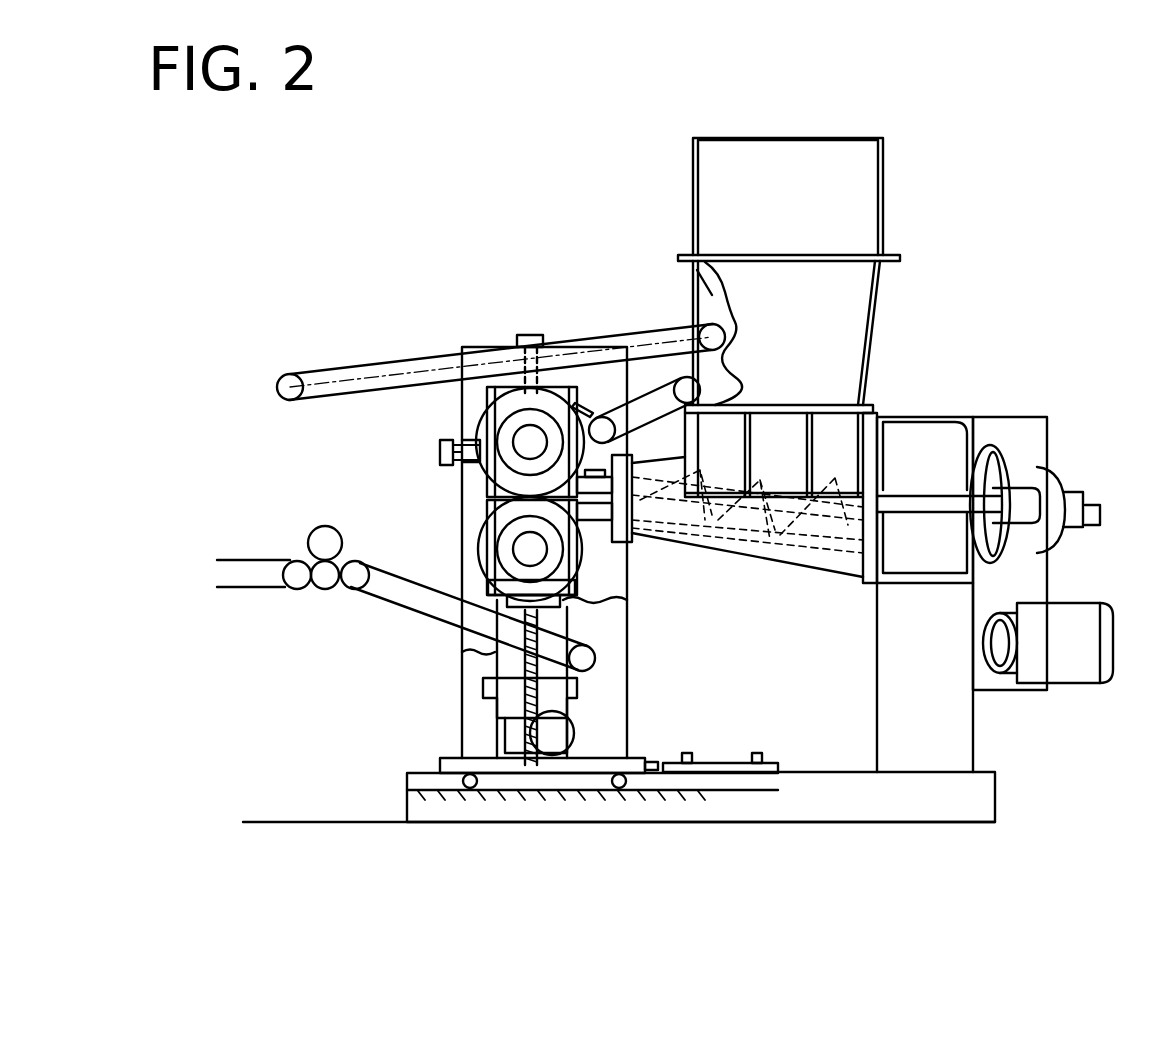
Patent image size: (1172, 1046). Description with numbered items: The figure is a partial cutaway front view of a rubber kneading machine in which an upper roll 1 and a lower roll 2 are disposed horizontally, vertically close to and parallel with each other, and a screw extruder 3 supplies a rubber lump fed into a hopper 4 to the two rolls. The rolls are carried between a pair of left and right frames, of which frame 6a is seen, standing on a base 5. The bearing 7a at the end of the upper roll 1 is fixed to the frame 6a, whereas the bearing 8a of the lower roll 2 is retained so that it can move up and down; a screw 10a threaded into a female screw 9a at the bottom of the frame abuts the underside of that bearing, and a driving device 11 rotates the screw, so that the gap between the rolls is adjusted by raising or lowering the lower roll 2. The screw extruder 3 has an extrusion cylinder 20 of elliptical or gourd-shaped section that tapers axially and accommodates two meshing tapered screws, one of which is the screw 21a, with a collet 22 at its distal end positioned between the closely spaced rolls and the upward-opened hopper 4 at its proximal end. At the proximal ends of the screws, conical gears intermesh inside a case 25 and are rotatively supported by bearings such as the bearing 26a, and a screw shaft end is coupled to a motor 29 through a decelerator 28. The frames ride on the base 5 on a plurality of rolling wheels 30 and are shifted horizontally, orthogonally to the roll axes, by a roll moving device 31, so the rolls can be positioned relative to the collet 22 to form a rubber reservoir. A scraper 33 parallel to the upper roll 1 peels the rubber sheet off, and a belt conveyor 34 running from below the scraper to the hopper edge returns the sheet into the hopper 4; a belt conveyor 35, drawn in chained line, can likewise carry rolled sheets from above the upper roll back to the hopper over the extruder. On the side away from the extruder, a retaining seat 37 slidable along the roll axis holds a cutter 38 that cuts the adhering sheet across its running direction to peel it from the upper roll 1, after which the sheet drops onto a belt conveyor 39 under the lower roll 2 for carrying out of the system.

The upper roll 1 is at (500, 420).
The lower roll 2 is at (480, 553).
The screw extruder 3 is at (898, 182).
The hopper 4 is at (868, 297).
The base 5 is at (833, 822).
The frame 6a is at (467, 692).
The bearing 7a is at (503, 410).
The bearing 8a is at (573, 600).
The female screw 9a is at (550, 698).
The screw 10a is at (587, 660).
The driving device 11 is at (518, 745).
The extrusion cylinder 20 is at (818, 572).
The tapered screw 21a is at (865, 445).
The collet 22 is at (593, 507).
The case 25 is at (948, 432).
The bearing 26a is at (990, 452).
The decelerator 28 is at (1040, 445).
The motor 29 is at (1040, 665).
The rolling wheel 30 is at (470, 790).
The roll moving device 31 is at (690, 772).
The scraper 33 is at (585, 403).
The belt conveyor 34 is at (657, 397).
The belt conveyor 35 is at (360, 365).
The retaining seat 37 is at (440, 452).
The cutter 38 is at (470, 450).
The belt conveyor 39 is at (402, 603).